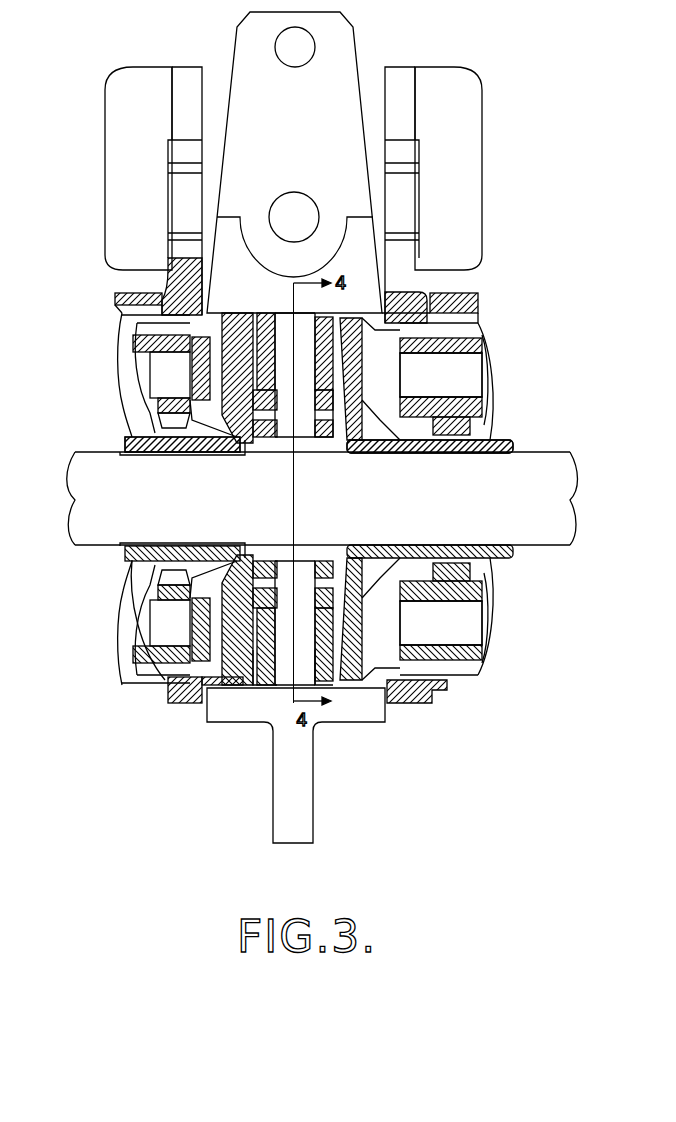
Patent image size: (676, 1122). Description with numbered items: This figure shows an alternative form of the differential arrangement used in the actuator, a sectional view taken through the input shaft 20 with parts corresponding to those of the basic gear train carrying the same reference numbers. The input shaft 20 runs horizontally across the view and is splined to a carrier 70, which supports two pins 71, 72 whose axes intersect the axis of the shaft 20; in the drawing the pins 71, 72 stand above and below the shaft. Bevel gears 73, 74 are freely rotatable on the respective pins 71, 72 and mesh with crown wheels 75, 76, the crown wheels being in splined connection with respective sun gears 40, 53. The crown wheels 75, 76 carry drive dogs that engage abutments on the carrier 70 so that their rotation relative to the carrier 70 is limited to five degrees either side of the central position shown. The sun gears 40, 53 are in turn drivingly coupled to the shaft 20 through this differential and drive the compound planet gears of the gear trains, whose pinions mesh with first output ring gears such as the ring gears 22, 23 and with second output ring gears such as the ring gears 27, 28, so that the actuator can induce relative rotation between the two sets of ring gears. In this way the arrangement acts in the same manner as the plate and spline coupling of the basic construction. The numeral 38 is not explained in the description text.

The input shaft 20 is at (540, 478).
The first output ring gear 22 is at (130, 298).
The first output ring gear 23 is at (478, 305).
The second output ring gear 27 is at (188, 703).
The second output ring gear 28 is at (410, 703).
The lower bracket 38 is at (268, 700).
The sun gear 40 is at (505, 440).
The sun gear 53 is at (130, 440).
The carrier 70 is at (323, 686).
The pin 71 is at (286, 440).
The pin 72 is at (288, 560).
The bevel gear 73 is at (264, 306).
The bevel gear 74 is at (270, 686).
The crown wheel 75 is at (338, 440).
The crown wheel 76 is at (240, 586).